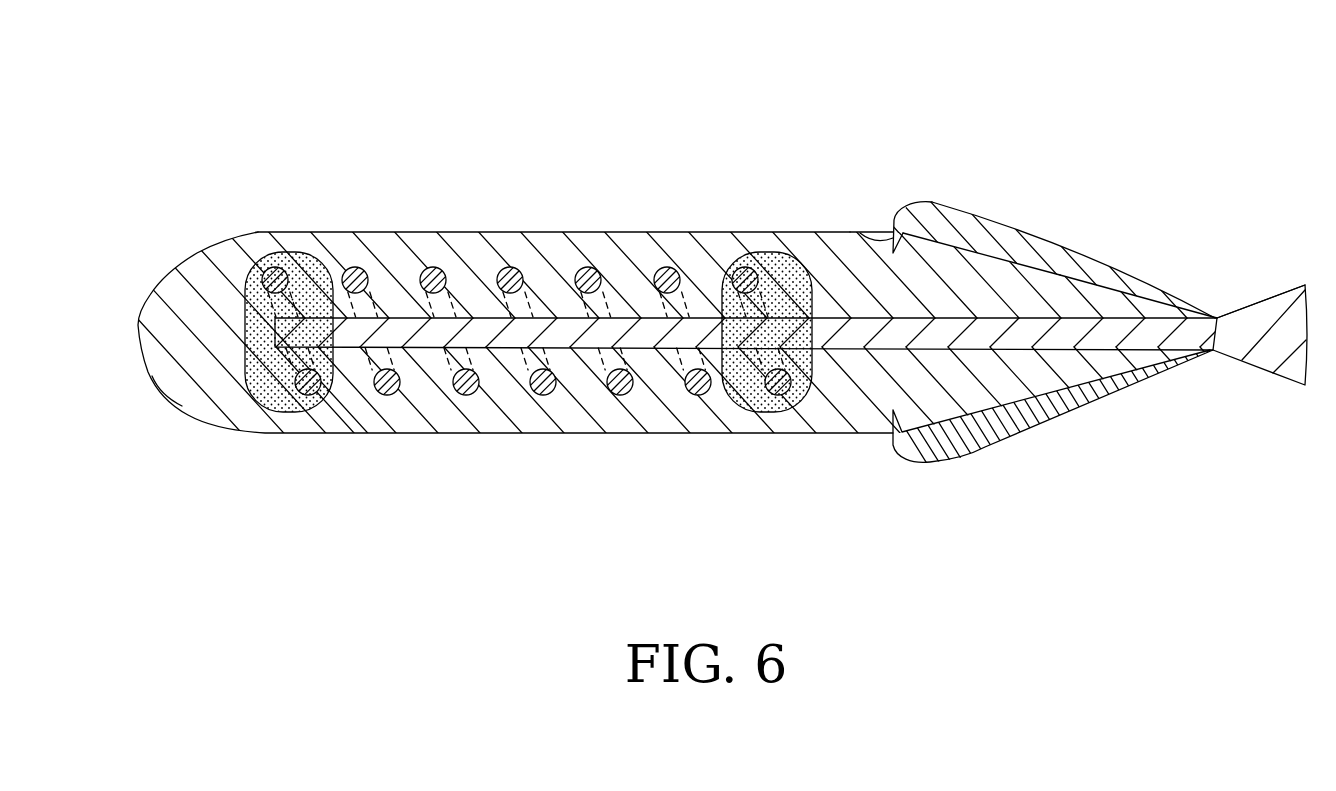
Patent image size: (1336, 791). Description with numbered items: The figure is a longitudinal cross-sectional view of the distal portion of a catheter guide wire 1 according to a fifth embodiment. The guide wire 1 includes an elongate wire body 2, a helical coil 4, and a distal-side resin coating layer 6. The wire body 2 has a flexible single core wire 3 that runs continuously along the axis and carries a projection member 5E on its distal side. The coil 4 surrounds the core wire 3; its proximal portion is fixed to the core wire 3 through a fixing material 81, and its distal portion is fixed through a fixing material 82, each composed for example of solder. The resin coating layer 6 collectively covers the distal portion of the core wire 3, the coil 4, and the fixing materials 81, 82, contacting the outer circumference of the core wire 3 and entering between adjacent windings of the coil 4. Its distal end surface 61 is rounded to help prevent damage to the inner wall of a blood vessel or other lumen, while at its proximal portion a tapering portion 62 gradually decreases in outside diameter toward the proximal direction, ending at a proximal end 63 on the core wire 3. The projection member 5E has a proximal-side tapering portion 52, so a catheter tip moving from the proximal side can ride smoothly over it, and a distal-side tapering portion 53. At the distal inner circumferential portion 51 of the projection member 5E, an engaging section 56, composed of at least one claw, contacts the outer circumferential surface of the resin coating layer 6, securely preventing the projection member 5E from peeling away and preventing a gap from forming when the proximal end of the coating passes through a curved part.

The guide wire 1 is at (1141, 78).
The wire body 2 is at (1280, 284).
The core wire 3 is at (1262, 317).
The helical coil 4 is at (657, 263).
The projection member 5E is at (1005, 222).
The resin coating layer 6 is at (550, 262).
The body end corner 51 is at (888, 229).
The proximal-side tapering portion 52 is at (1070, 252).
The distal-side tapering portion 53 is at (912, 205).
The engaging section 56 is at (885, 238).
The distal end surface 61 is at (139, 338).
The tapering portion 62 is at (1057, 413).
The proximal end 63 is at (1180, 308).
The fixing material 81 is at (772, 270).
The fixing material 82 is at (310, 265).